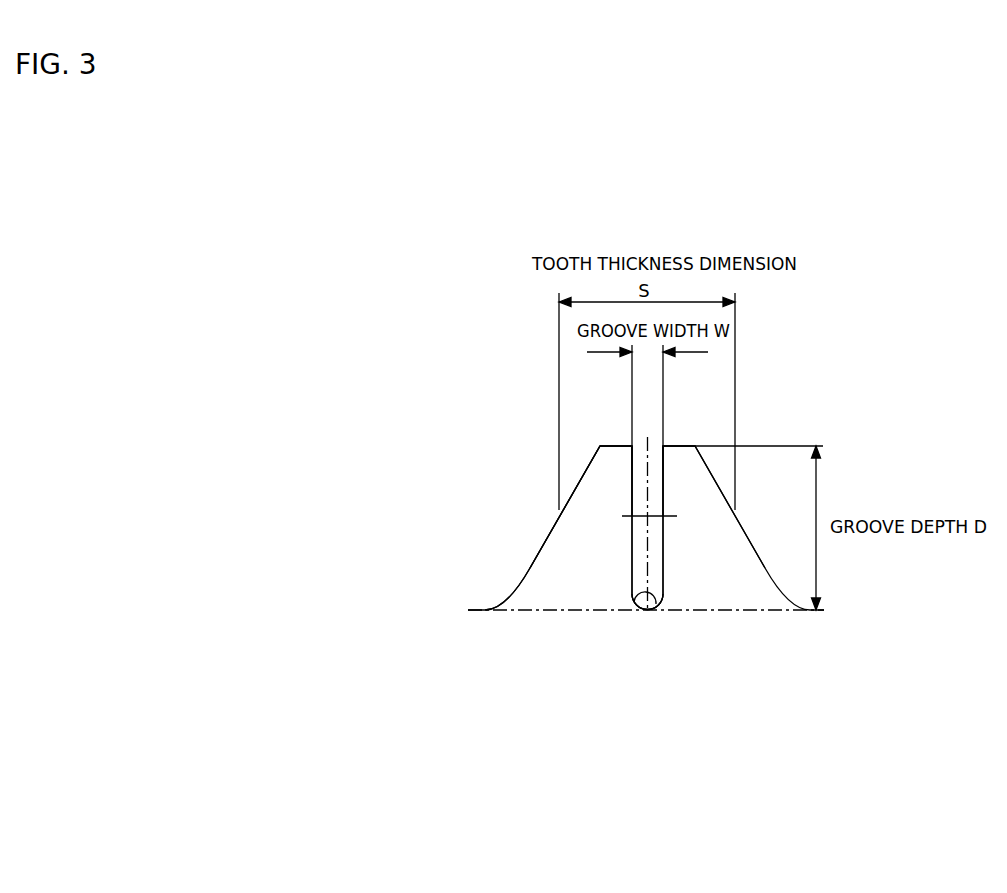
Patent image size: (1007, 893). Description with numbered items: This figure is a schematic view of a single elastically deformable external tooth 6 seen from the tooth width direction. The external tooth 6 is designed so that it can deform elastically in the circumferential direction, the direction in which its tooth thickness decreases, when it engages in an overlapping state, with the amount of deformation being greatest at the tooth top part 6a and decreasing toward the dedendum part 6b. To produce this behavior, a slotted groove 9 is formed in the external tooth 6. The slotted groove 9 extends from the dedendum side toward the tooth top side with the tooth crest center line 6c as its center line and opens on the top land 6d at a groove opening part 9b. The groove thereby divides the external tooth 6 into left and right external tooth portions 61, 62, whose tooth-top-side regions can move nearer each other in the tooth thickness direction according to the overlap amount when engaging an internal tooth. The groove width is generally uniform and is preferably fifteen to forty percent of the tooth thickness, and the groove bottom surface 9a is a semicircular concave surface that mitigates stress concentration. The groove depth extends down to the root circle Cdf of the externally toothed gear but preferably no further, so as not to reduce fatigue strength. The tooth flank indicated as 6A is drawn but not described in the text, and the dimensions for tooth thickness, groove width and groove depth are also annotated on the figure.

The external tooth 6 is at (528, 508).
The tooth flank surface 6A is at (535, 535).
The tooth top part 6a is at (604, 458).
The dedendum part 6b is at (530, 592).
The tooth crest center line 6c is at (627, 602).
The top land 6d is at (678, 445).
The slotted groove 9 is at (624, 474).
The groove bottom surface 9a is at (650, 600).
The groove opening part 9b is at (642, 443).
The external tooth portion 61 is at (577, 537).
The external tooth portion 62 is at (718, 538).
The root circle Cdf is at (542, 622).